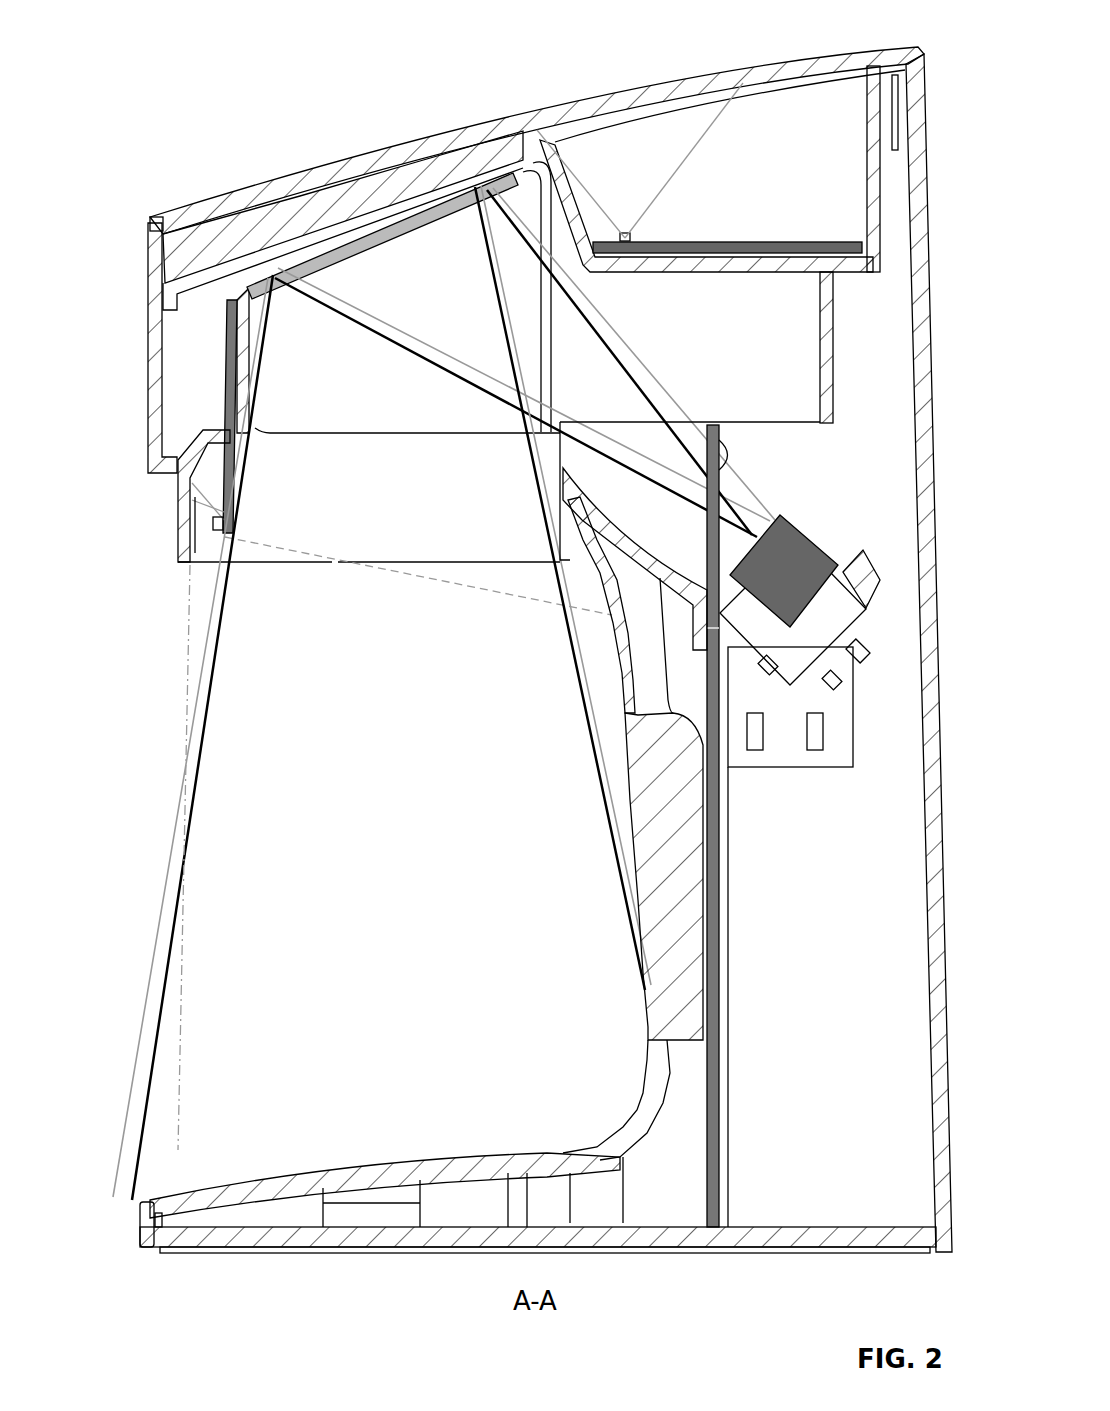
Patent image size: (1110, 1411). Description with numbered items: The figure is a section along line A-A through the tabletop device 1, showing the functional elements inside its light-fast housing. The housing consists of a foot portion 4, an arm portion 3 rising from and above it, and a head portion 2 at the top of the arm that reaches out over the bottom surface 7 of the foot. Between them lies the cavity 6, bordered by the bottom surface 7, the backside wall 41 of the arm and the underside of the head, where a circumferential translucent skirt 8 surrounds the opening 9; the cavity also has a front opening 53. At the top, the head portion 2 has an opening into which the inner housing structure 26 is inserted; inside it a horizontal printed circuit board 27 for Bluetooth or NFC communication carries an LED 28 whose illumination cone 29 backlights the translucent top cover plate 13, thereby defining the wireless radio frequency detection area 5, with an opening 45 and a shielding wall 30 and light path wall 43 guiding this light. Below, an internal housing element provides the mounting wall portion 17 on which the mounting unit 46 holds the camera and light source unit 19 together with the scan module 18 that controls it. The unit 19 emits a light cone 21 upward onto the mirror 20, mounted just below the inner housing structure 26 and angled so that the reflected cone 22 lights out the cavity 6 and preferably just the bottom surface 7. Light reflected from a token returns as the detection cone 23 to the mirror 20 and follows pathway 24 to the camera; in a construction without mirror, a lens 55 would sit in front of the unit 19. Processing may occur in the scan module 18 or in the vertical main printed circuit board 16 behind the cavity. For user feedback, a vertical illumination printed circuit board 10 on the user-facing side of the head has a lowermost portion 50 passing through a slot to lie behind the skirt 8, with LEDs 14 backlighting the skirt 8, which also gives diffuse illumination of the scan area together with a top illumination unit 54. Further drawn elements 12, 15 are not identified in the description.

The tabletop device 1 is at (559, 646).
The head portion 2 is at (118, 270).
The arm portion 3 is at (937, 907).
The foot portion 4 is at (273, 1213).
The wireless radio frequency detection area 5 is at (336, 136).
The cavity 6 is at (440, 978).
The bottom surface 7 is at (380, 1163).
The translucent skirt 8 is at (180, 520).
The opening 9 is at (400, 568).
The vertical illumination printed circuit board 10 is at (180, 480).
The base plate 12 is at (630, 1237).
The top cover plate 13 is at (190, 215).
The LEDs 14 is at (222, 568).
The guide 15 is at (200, 506).
The main printed circuit board 16 is at (720, 1027).
The mounting wall portion 17 is at (627, 547).
The scan module 18 is at (883, 565).
The camera and light source unit 19 is at (790, 545).
The mirror 20 is at (337, 262).
The light cone 21 is at (617, 322).
The reflected cone 22 is at (132, 1107).
The camera detection cone before mirror 23 is at (143, 1140).
The camera detection cone behind mirror 24 is at (606, 458).
The inner housing structure 26 is at (873, 163).
The printed circuit board for Bluetooth/NFC communication 27 is at (803, 240).
The LED 28 is at (632, 232).
The illumination cone 29 is at (703, 133).
The shielding wall 30 is at (845, 320).
The backside wall 41 is at (655, 852).
The light path wall 43 is at (243, 357).
The opening for light path and backlighting 45 is at (862, 95).
The mounting unit 46 is at (890, 585).
The lowermost portion of printed circuit board 50 is at (232, 490).
The front opening of cavity 53 is at (222, 892).
The top illumination unit 54 is at (313, 565).
The lens 55 is at (180, 560).